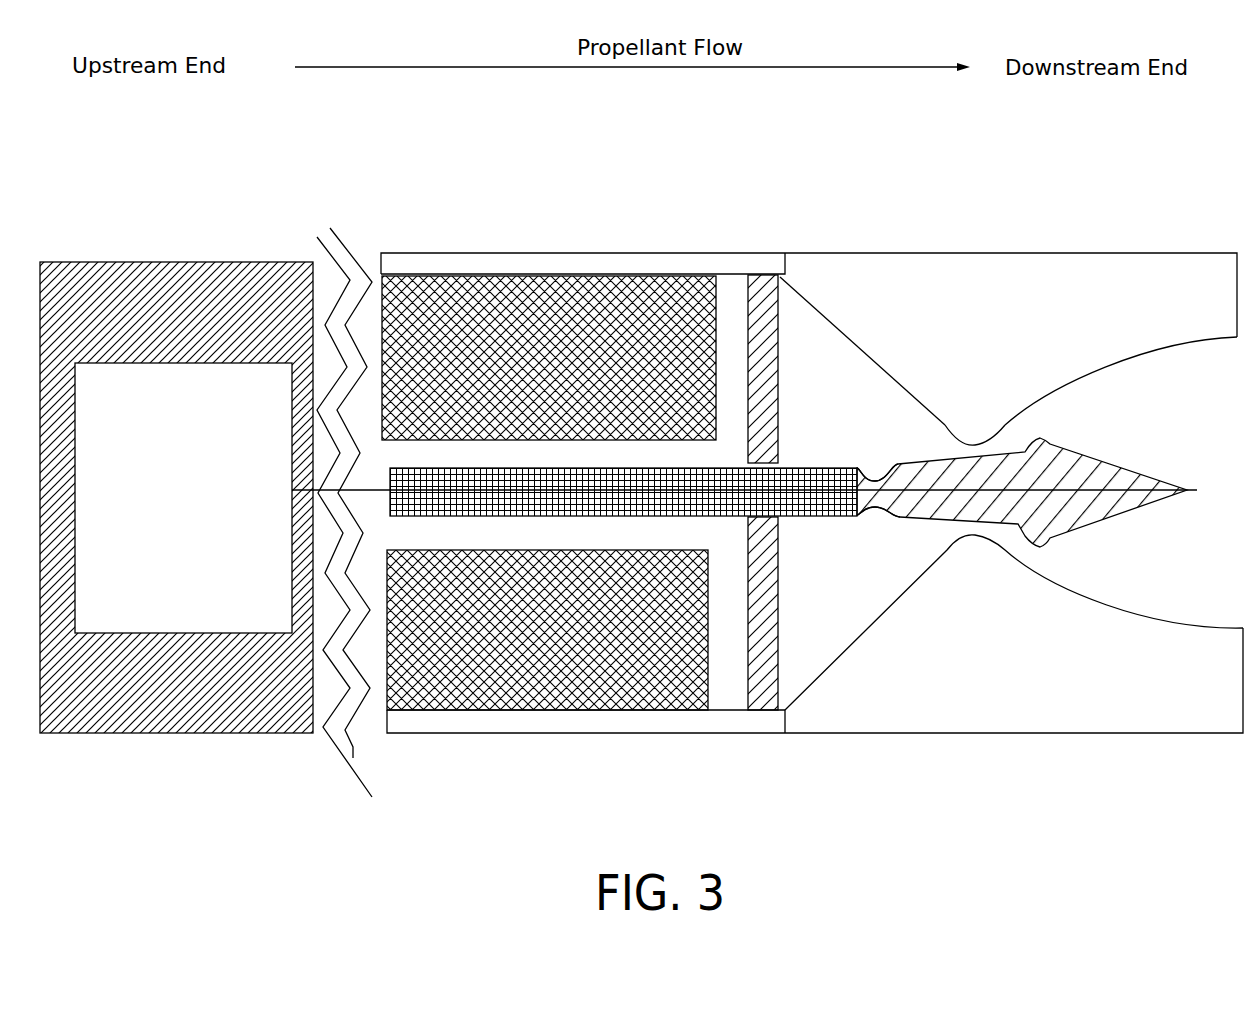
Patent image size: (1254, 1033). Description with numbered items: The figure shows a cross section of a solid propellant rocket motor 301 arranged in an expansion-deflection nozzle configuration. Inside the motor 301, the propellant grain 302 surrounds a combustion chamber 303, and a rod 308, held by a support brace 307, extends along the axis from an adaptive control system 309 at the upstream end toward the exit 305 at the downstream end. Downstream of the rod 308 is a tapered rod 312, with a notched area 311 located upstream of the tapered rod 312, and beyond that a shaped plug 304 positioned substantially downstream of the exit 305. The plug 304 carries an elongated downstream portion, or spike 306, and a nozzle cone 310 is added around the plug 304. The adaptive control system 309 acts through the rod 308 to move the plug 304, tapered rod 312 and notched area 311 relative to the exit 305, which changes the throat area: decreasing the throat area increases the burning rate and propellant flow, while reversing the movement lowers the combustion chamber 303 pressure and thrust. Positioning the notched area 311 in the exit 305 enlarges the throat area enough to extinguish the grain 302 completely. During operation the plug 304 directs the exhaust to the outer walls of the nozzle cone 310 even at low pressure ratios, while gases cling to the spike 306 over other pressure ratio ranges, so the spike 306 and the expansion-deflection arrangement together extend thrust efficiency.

The rocket motor 301 is at (503, 258).
The grain 302 is at (565, 322).
The combustion chamber 303 is at (830, 377).
The shaped plug 304 is at (1040, 437).
The exit 305 is at (978, 443).
The elongated downstream portion (spike) 306 is at (1100, 452).
The support brace 307 is at (765, 690).
The rod 308 is at (560, 516).
The adaptive control system 309 is at (165, 580).
The nozzle cone 310 is at (1103, 612).
The notched area 311 is at (866, 517).
The tapered rod 312 is at (948, 460).